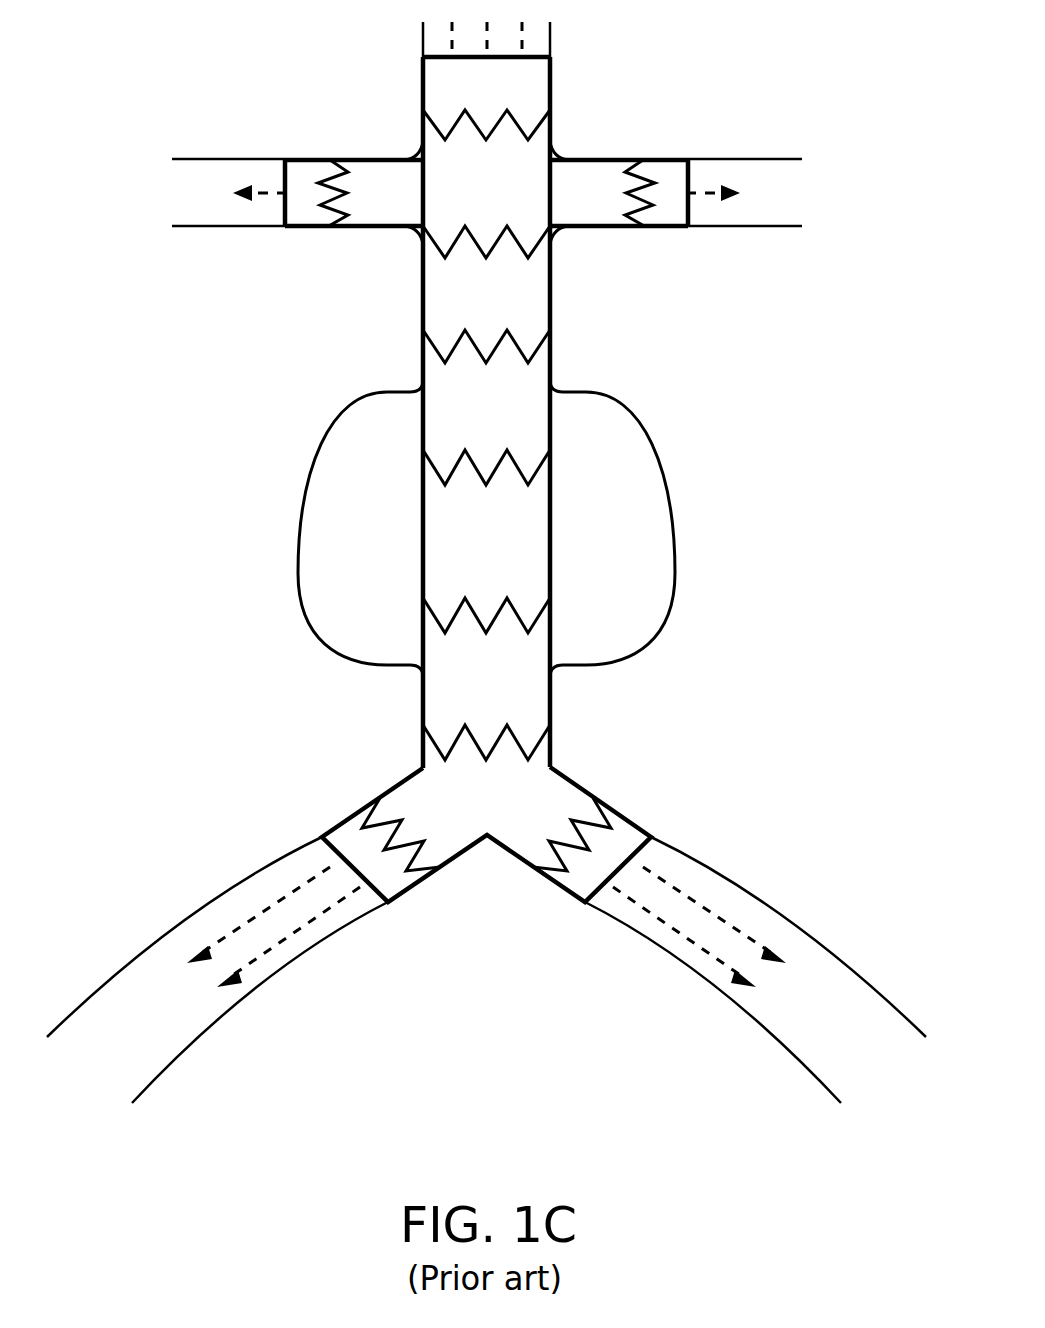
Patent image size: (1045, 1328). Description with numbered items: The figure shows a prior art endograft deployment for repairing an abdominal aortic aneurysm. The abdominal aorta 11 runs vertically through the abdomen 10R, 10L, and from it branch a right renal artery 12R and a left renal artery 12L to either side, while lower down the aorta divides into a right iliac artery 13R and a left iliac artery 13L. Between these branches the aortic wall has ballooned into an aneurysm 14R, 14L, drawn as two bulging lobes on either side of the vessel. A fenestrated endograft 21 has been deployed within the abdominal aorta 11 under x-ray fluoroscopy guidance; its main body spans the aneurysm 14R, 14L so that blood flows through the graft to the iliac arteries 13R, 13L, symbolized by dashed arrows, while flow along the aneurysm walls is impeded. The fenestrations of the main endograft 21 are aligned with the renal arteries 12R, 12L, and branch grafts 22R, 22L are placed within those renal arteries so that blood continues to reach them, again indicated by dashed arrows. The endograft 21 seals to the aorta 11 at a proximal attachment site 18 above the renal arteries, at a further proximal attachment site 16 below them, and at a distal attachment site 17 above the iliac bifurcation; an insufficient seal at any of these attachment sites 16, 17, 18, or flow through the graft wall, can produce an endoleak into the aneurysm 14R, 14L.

The abdominal aorta 11 is at (422, 75).
The proximal attachment site 18 is at (563, 62).
The proximal attachment site 16 is at (559, 297).
The distal attachment site 17 is at (559, 685).
The fenestrated endograft 21 is at (486, 541).
The aneurysm 14R is at (360, 528).
The aneurysm 14L is at (612, 528).
The abdomen 10R is at (229, 370).
The abdomen 10L is at (750, 370).
The branch graft 22R is at (354, 193).
The branch graft 22L is at (619, 193).
The right renal artery 12R is at (232, 192).
The left renal artery 12L is at (741, 192).
The right iliac artery 13R is at (217, 970).
The left iliac artery 13L is at (755, 970).